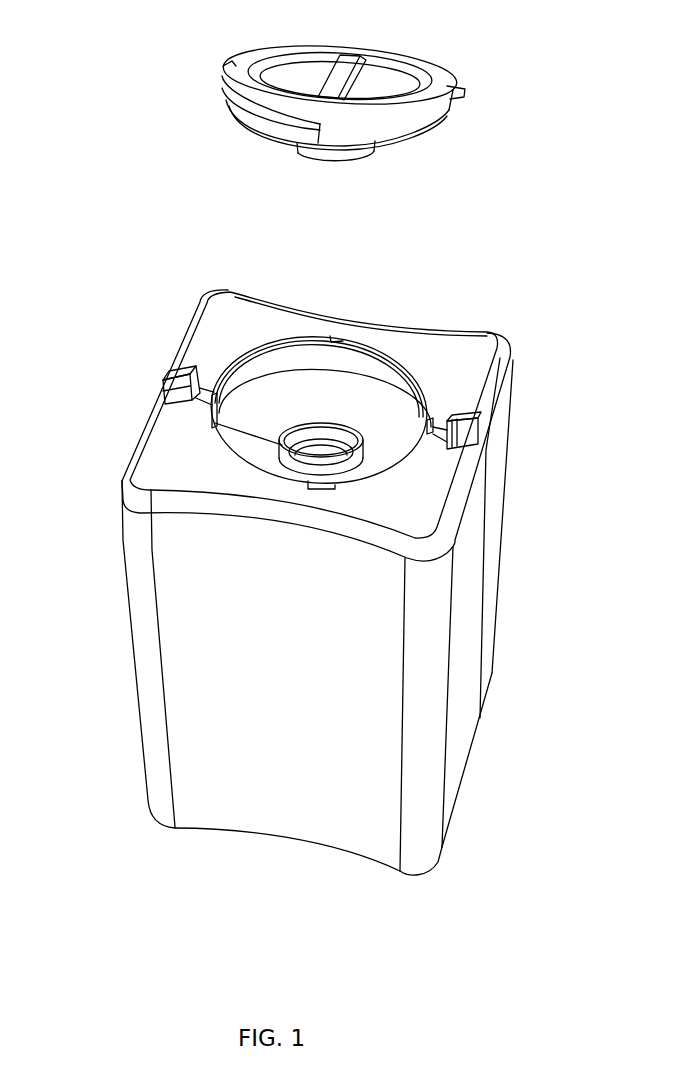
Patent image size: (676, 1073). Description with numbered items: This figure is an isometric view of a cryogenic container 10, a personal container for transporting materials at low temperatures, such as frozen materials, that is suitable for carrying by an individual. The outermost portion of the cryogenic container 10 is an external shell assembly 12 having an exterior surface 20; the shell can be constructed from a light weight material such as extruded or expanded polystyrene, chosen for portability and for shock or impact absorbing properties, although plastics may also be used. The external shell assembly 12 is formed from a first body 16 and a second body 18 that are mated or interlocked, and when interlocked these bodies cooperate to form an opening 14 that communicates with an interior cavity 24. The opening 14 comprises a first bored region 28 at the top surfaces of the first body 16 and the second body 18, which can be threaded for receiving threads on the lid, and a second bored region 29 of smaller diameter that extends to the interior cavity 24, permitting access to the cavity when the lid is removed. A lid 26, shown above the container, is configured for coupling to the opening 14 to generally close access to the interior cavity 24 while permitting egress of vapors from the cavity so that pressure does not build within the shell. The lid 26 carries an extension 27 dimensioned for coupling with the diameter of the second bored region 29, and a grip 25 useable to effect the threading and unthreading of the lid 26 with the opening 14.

The cryogenic container 10 is at (270, 538).
The external shell assembly 12 is at (146, 424).
The opening 14 is at (248, 427).
The first body 16 is at (200, 632).
The second body 18 is at (489, 418).
The exterior surface 20 is at (453, 353).
The interior cavity 24 is at (317, 467).
The grip 25 is at (353, 88).
The lid 26 is at (432, 116).
The extension 27 is at (367, 150).
The first bored region 28 is at (253, 377).
The second bored region 29 is at (338, 433).